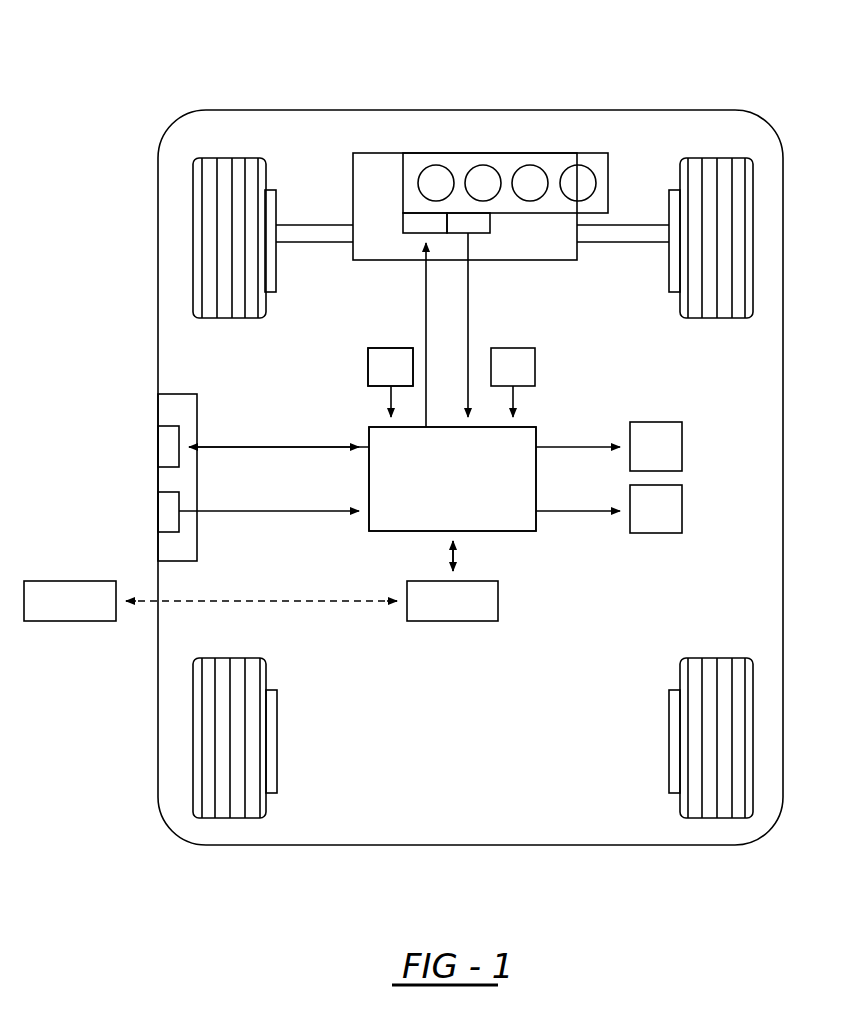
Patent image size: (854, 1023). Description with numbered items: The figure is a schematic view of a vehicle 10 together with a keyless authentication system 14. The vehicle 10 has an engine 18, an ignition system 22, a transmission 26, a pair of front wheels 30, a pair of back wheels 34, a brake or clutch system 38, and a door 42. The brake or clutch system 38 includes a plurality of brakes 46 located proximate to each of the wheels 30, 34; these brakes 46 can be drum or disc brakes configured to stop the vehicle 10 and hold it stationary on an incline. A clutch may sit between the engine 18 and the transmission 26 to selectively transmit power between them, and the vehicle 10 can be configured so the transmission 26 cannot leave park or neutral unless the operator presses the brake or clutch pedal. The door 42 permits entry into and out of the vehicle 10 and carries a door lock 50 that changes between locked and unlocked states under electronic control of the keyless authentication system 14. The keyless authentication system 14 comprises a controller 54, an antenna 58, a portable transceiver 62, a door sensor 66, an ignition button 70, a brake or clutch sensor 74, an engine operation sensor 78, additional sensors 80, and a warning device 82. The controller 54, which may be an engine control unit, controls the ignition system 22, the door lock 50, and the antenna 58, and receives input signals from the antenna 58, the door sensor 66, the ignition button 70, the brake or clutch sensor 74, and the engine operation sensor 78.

The vehicle 10 is at (128, 128).
The keyless authentication system 14 is at (560, 572).
The engine 18 is at (553, 153).
The ignition system 22 is at (403, 222).
The transmission 26 is at (380, 153).
The front wheels 30 is at (225, 158).
The back wheels 34 is at (222, 818).
The brake or clutch system 38 is at (345, 360).
The door 42 is at (178, 394).
The brakes 46 is at (277, 195).
The door lock 50 is at (170, 426).
The controller 54 is at (470, 493).
The antenna 58 is at (440, 621).
The portable transceiver 62 is at (65, 621).
The door sensor 66 is at (168, 532).
The ignition button 70 is at (535, 365).
The brake or clutch sensor 74 is at (368, 372).
The engine operation sensor 78 is at (492, 223).
The additional sensors 80 is at (682, 508).
The warning device 82 is at (682, 437).